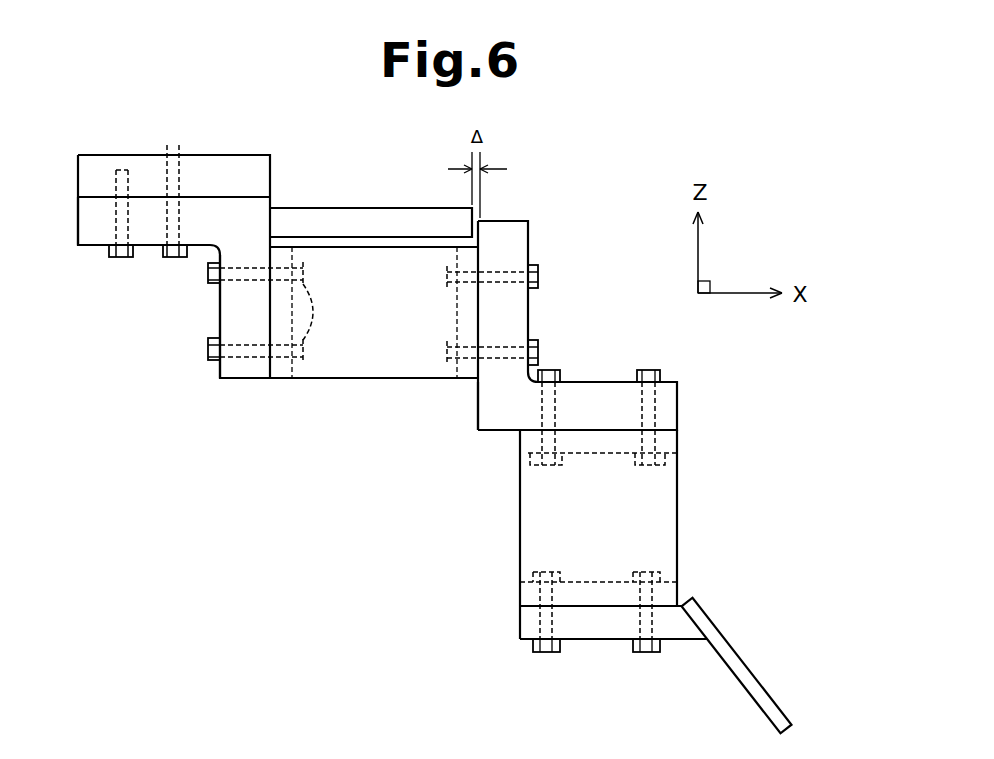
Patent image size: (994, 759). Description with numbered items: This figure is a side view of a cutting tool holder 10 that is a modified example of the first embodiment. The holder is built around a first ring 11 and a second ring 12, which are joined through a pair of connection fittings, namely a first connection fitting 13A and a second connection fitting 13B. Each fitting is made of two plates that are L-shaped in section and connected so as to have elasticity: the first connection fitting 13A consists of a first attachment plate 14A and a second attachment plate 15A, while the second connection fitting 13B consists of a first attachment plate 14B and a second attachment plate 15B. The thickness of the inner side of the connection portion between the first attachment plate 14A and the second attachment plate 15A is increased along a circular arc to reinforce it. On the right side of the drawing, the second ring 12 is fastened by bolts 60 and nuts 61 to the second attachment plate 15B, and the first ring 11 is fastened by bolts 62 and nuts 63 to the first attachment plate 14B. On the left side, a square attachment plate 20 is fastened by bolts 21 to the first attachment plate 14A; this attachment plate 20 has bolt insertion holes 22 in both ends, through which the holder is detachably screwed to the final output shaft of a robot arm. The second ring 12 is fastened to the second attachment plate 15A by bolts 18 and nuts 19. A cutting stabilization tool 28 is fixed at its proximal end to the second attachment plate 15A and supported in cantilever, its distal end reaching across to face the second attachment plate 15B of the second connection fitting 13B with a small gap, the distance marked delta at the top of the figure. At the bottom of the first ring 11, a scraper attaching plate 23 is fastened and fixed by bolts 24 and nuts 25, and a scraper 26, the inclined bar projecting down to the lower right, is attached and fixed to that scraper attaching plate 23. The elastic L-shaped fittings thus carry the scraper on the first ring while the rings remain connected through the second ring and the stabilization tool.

The cutting tool holder 10 is at (628, 185).
The first ring 11 is at (677, 505).
The second ring 12 is at (350, 378).
The first connection fitting 13A is at (79, 245).
The second connection fitting 13B is at (490, 430).
The first attachment plate 14A is at (148, 245).
The first attachment plate 14B is at (677, 410).
The second attachment plate 15A is at (237, 380).
The second attachment plate 15B is at (528, 305).
The bolts 18 is at (208, 352).
The nuts 19 is at (319, 306).
The attachment plate 20 is at (235, 166).
The bolts 21 is at (121, 258).
The bolt insertion holes 22 is at (173, 147).
The scraper attaching plate 23 is at (593, 634).
The bolts 24 is at (644, 652).
The nuts 25 is at (645, 568).
The scraper 26 is at (740, 656).
The cutting stabilization tool 28 is at (358, 210).
The bolts 60 is at (556, 337).
The nuts 61 is at (445, 351).
The bolts 62 is at (645, 370).
The nuts 63 is at (687, 468).